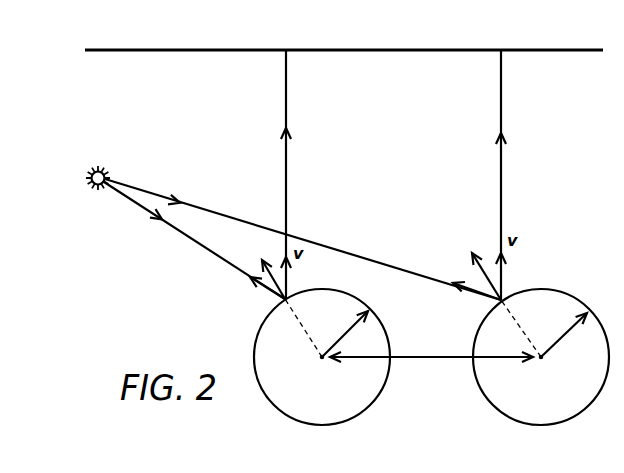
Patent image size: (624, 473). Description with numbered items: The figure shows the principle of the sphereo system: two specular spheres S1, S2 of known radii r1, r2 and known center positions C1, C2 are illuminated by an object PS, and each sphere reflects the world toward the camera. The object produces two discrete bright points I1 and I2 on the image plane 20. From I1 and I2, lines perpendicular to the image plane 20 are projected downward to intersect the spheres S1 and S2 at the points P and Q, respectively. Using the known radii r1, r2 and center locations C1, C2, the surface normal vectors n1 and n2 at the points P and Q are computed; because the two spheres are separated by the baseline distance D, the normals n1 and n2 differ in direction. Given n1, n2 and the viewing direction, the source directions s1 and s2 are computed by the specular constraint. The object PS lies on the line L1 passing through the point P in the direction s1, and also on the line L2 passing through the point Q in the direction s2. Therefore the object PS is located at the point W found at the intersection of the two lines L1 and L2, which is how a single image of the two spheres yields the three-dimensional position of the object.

The image plane 20 is at (576, 51).
The location of the object W is at (115, 169).
The object PS is at (89, 184).
The image point on first sphere I1 is at (289, 159).
The image point on second sphere I2 is at (501, 160).
The first line L1 is at (194, 240).
The second line L2 is at (303, 239).
The first source direction s1 is at (256, 285).
The second source direction s2 is at (462, 291).
The surface normal vector at point P n1 is at (265, 265).
The surface normal vector at point Q n2 is at (471, 271).
The first specular sphere S1 is at (322, 357).
The second specular sphere S2 is at (541, 357).
The intersection point on first sphere P is at (303, 322).
The intersection point on second sphere Q is at (521, 323).
The world radius of first sphere r1 is at (346, 334).
The world radius of second sphere r2 is at (565, 335).
The distance between spheres D is at (431, 345).
The world center of first sphere C1 is at (311, 370).
The world center of second sphere C2 is at (553, 371).